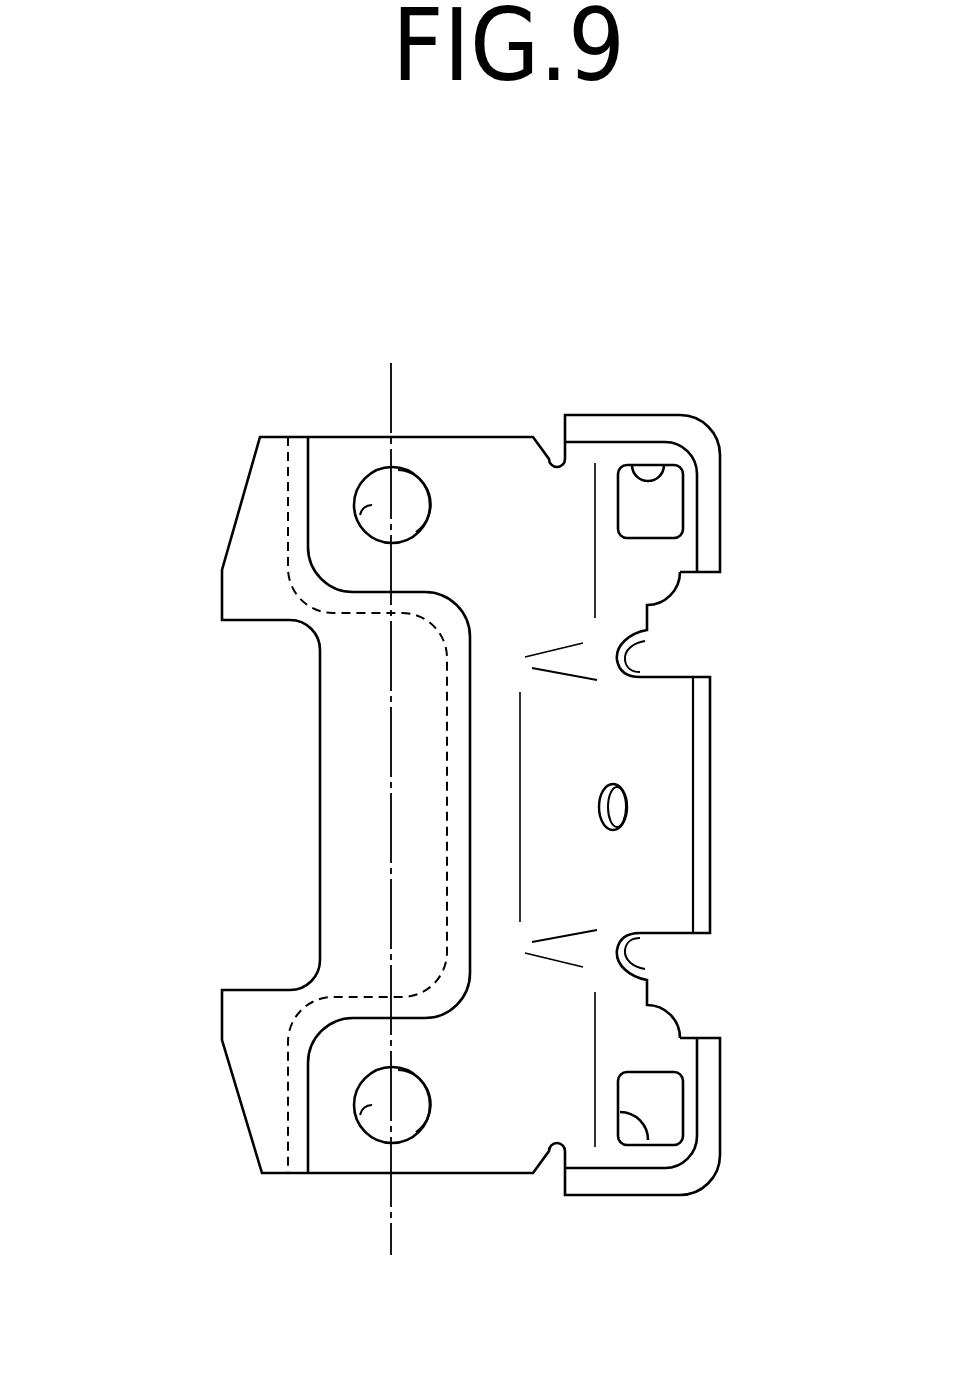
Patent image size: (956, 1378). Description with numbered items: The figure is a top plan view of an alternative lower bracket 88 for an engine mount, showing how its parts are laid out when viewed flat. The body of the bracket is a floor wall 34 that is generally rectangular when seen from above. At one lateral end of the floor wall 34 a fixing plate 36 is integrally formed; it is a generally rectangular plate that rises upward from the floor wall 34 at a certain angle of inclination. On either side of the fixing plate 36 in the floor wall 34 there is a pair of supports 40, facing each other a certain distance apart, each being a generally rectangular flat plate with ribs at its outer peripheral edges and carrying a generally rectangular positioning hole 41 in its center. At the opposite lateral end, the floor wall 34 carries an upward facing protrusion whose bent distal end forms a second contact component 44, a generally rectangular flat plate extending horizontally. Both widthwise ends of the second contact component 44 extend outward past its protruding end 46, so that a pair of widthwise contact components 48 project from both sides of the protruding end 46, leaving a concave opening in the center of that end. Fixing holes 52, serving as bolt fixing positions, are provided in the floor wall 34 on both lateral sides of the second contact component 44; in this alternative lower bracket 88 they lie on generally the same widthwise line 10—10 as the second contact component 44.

The lower bracket 88 is at (180, 360).
The line 10— 10 is at (393, 804).
The floor wall 34 is at (506, 1057).
The fixing plate 36 is at (657, 752).
The support 40 is at (662, 560).
The positioning hole 41 is at (640, 478).
The second contact component 44 is at (368, 853).
The protruding end 46 is at (317, 723).
The widthwise contact component 48 is at (263, 610).
The fixing hole 52 is at (372, 505).